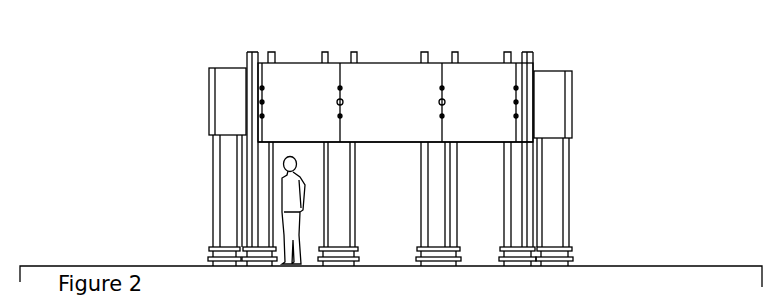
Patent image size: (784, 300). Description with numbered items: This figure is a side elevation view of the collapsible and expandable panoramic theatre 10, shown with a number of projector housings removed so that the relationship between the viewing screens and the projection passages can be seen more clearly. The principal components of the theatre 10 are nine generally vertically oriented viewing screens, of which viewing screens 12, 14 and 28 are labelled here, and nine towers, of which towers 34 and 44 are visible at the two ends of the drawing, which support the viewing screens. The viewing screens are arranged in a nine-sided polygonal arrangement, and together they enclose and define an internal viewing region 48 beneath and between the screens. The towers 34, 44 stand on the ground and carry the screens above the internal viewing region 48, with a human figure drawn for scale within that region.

The panoramic theatre 10 is at (487, 51).
The viewing screen 12 is at (395, 118).
The viewing screen 14 is at (302, 128).
The viewing screen 28 is at (481, 118).
The tower 34 is at (229, 68).
The tower 44 is at (552, 71).
The internal viewing region 48 is at (372, 187).